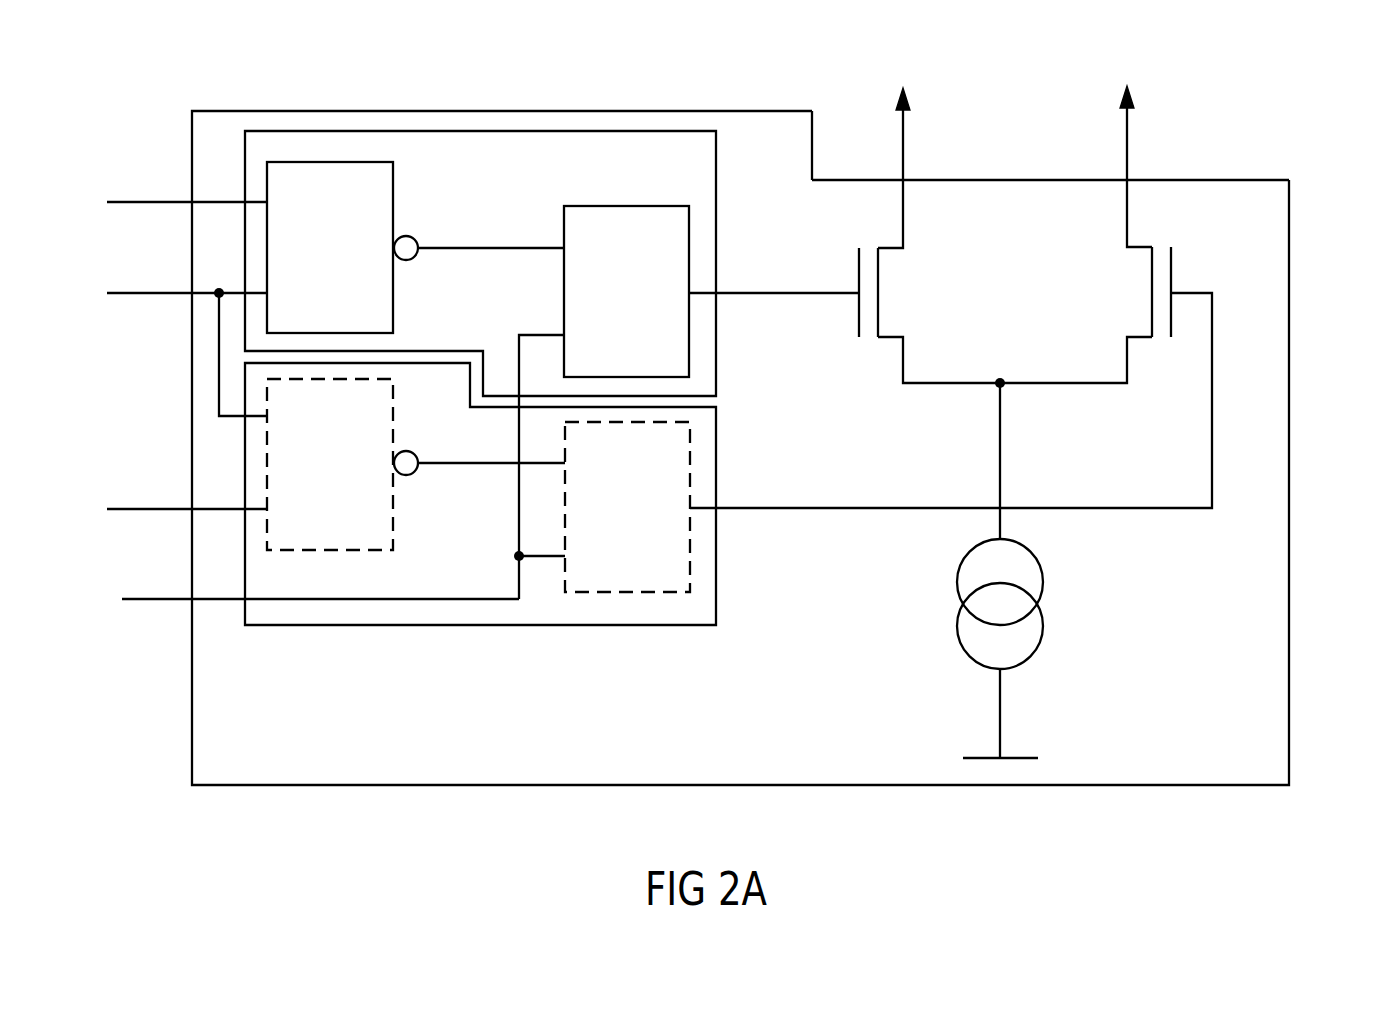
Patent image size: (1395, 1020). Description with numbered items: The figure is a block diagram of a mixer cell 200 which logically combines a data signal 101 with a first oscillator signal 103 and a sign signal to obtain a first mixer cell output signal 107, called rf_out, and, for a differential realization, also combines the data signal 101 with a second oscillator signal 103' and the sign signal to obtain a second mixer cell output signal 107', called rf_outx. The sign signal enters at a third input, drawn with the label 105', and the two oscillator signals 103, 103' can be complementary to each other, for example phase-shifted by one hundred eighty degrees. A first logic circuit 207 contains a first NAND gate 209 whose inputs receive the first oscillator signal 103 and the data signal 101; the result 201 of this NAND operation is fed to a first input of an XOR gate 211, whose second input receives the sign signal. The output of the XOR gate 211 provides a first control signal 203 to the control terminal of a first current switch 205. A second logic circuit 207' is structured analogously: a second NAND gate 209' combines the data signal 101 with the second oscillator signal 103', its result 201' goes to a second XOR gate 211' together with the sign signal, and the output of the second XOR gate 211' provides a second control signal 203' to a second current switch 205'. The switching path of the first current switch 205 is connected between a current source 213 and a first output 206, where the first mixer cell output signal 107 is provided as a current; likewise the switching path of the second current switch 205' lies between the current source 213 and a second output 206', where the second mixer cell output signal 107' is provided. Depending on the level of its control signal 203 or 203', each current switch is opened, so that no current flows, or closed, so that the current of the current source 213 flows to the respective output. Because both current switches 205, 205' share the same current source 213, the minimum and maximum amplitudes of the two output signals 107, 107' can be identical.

The mixer cell 200 is at (1289, 682).
The data signal 101 is at (150, 292).
The first oscillator signal 103 is at (172, 165).
The second oscillator signal 103' is at (167, 475).
The sign input 105' is at (286, 564).
The first mixer cell output signal 107 is at (927, 112).
The second mixer cell output signal 107' is at (1165, 112).
The result of the first logical combination 201 is at (491, 207).
The result of the NAND operation 201' is at (491, 504).
The first control signal 203 is at (774, 316).
The second control signal 203' is at (951, 442).
The first current switch 205 is at (929, 281).
The second current switch 205' is at (1085, 281).
The first output 206 is at (913, 157).
The second output 206' is at (1152, 156).
The first logic circuit 207 is at (480, 215).
The second logic circuit 207' is at (480, 536).
The first NAND gate 209 is at (342, 200).
The second NAND gate 209' is at (345, 530).
The XOR gate 211 is at (601, 368).
The second XOR gate 211' is at (672, 507).
The current source 213 is at (1043, 635).